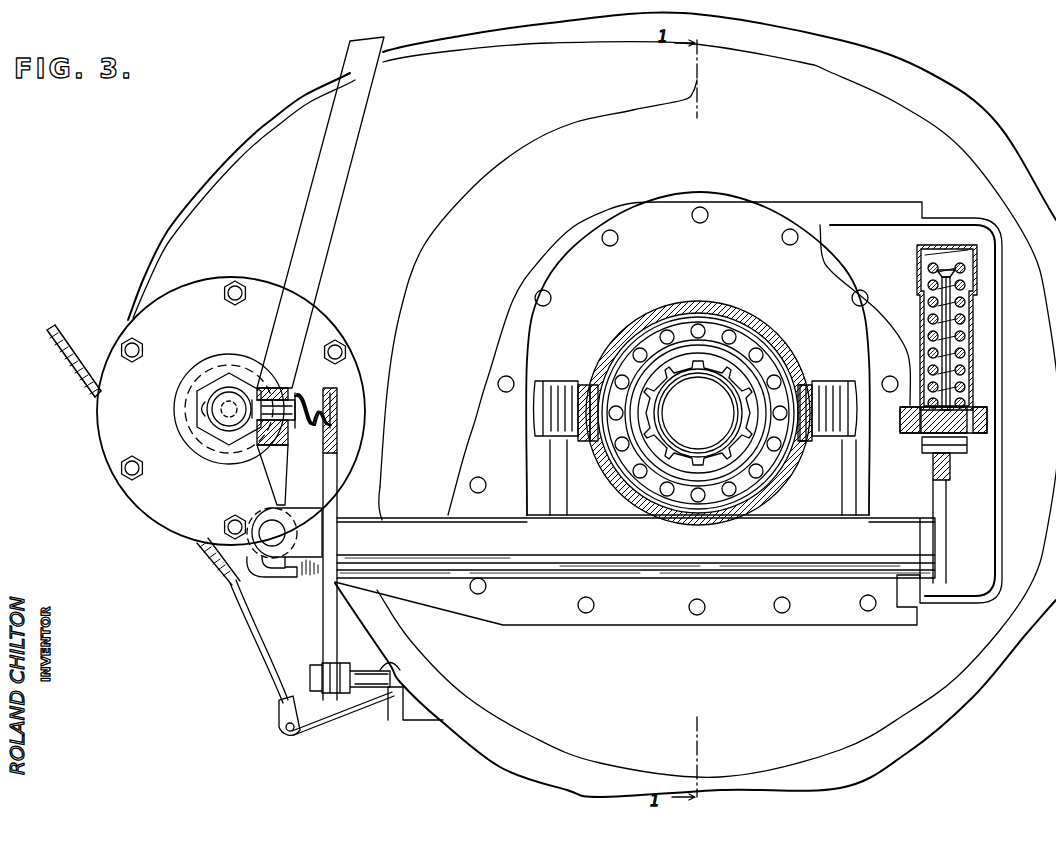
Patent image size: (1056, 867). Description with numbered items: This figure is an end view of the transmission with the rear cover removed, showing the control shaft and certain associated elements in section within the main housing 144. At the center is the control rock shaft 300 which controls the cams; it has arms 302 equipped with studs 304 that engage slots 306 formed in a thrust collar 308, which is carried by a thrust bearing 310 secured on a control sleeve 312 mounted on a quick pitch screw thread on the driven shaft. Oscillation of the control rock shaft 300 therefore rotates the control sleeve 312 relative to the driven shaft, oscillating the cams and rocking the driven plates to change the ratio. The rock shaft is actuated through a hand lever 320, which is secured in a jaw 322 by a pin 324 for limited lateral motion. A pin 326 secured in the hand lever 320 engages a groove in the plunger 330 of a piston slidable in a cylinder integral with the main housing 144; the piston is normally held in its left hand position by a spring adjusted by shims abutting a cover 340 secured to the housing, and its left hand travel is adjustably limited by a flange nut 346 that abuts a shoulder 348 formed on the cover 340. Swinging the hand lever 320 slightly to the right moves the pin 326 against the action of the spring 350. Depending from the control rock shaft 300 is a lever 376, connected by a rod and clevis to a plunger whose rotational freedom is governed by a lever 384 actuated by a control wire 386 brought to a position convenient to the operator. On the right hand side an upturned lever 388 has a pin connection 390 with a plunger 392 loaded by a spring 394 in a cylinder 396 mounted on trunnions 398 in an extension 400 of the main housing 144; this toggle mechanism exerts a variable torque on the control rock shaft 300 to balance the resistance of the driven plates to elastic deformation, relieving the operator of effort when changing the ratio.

The main housing 144 is at (940, 672).
The control rock shaft 300 is at (596, 515).
The arms 302 is at (555, 478).
The studs 304 is at (553, 437).
The slots 306 is at (582, 386).
The thrust collar 308 is at (695, 300).
The thrust bearing 310 is at (728, 338).
The control sleeve 312 is at (720, 358).
The hand lever 320 is at (364, 82).
The jaw 322 is at (293, 577).
The pin 324 is at (272, 533).
The pin 326 is at (296, 393).
The plunger 330 is at (207, 410).
The cover 340 is at (252, 280).
The flange nut 346 is at (190, 372).
The shoulder 348 is at (237, 365).
The spring 350 is at (322, 440).
The lever 376 is at (323, 626).
The lever 384 is at (323, 712).
The control wire 386 is at (235, 605).
The upturned lever 388 is at (946, 506).
The pin connection 390 is at (950, 465).
The plunger 392 is at (967, 443).
The spring 394 is at (970, 353).
The cylinder 396 is at (975, 322).
The trunnions 398 is at (982, 418).
The extension 400 is at (975, 392).